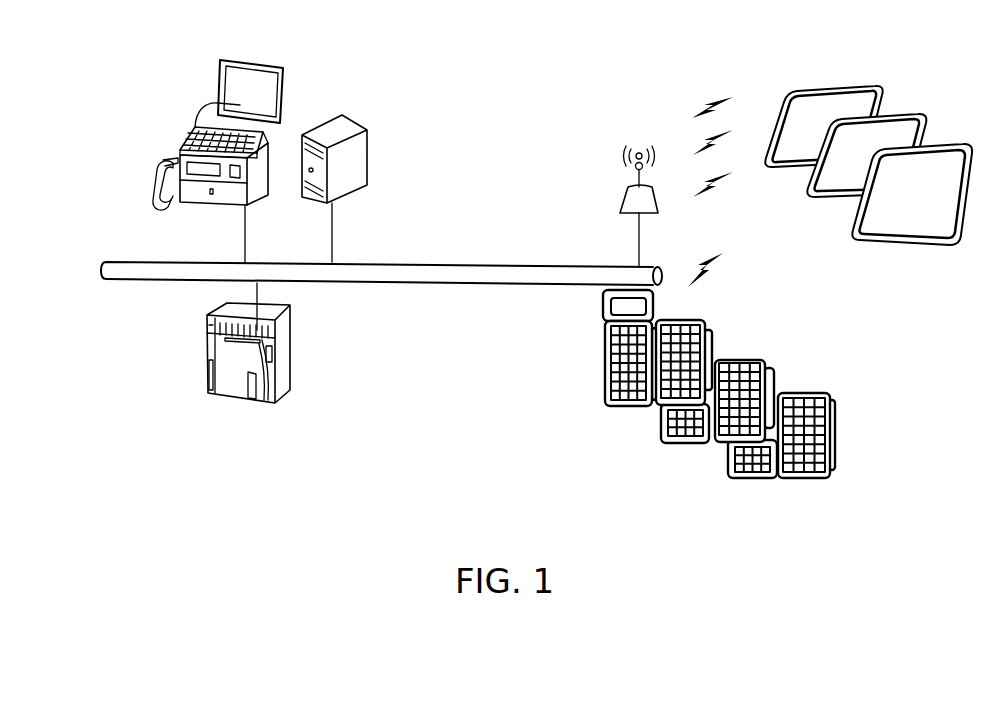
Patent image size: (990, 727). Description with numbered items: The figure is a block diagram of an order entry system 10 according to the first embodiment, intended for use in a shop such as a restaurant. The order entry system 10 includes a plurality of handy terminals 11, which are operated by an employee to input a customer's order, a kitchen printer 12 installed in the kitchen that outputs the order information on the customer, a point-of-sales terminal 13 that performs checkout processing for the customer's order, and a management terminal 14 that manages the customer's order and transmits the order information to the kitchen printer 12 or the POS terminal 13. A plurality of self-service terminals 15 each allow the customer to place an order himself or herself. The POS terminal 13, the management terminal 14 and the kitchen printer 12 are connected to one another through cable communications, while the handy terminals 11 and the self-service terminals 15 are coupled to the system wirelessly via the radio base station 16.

The order entry system 10 is at (537, 88).
The handy terminal 11 is at (705, 330).
The kitchen printer 12 is at (288, 367).
The point-of-sales (POS) terminal 13 is at (183, 136).
The management terminal 14 is at (365, 157).
The self-service terminal 15 is at (927, 113).
The radio base station 16 is at (622, 200).